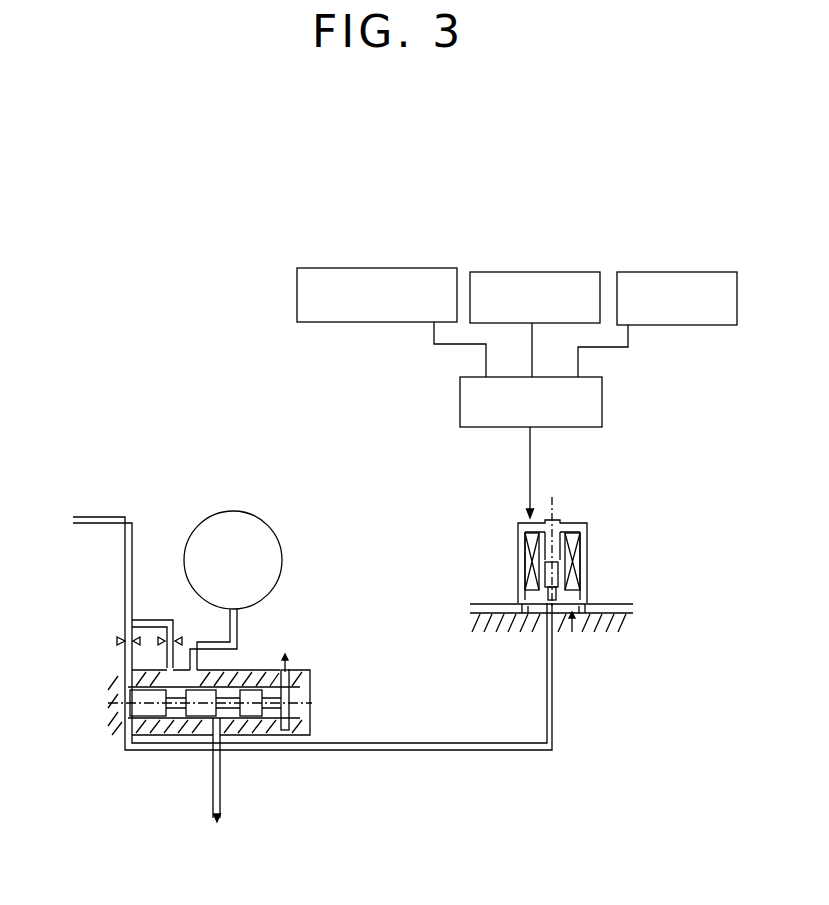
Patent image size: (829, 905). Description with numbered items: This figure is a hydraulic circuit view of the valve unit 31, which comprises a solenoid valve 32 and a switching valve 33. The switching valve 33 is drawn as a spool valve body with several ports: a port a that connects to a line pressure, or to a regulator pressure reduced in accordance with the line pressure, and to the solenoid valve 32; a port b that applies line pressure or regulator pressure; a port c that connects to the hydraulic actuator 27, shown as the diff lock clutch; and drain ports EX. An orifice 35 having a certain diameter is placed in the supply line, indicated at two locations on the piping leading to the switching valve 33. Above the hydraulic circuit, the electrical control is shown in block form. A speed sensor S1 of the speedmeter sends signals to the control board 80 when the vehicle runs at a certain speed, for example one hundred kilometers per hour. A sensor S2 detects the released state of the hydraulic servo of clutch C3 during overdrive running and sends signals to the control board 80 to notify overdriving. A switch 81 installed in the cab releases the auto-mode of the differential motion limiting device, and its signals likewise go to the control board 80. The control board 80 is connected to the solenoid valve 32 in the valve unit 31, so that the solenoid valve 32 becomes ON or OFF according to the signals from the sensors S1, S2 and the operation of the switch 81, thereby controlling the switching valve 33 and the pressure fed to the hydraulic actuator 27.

The speed sensor S1 is at (432, 268).
The sensor S2 is at (526, 272).
The switch 81 is at (633, 272).
The control board 80 is at (598, 404).
The solenoid valve 32 is at (588, 560).
The valve unit 31 is at (153, 488).
The hydraulic actuator 27 is at (277, 542).
The orifice 35 is at (122, 640).
The switching valve 33 is at (308, 652).
The port a is at (128, 724).
The port b is at (165, 670).
The port c is at (197, 672).